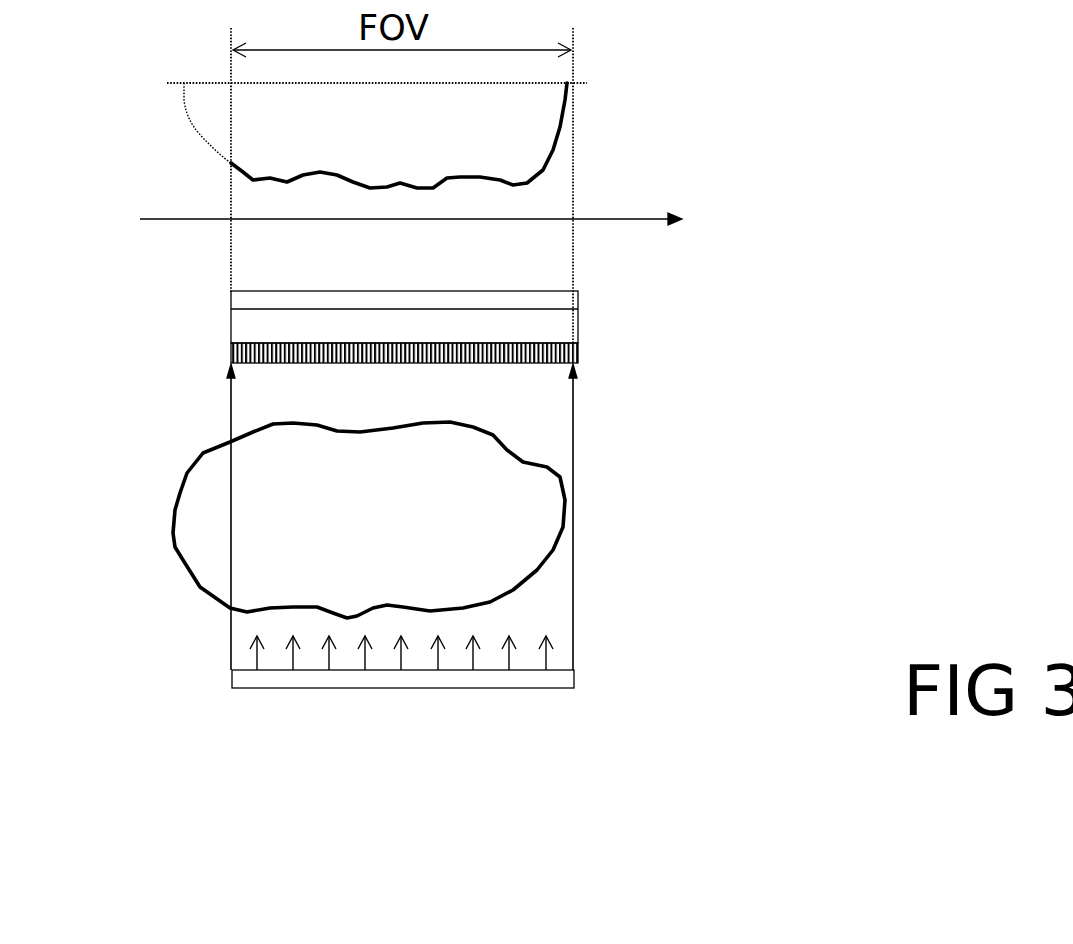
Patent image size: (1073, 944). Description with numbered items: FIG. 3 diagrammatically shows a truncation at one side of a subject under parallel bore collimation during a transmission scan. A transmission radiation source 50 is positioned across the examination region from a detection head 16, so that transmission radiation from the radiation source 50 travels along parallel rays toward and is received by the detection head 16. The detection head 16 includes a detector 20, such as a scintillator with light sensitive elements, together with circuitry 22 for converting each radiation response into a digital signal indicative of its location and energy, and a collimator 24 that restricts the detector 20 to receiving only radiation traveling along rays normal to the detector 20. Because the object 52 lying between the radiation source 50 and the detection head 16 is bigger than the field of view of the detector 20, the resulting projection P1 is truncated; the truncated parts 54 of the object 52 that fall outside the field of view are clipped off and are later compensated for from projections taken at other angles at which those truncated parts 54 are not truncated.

The truncated projection P1 is at (374, 184).
The truncated parts 54 is at (218, 109).
The detection head 16 is at (194, 296).
The detector 20 is at (238, 323).
The circuitry 22 is at (573, 302).
The collimator 24 is at (577, 369).
The object 52 is at (552, 470).
The radiation source 50 is at (574, 675).